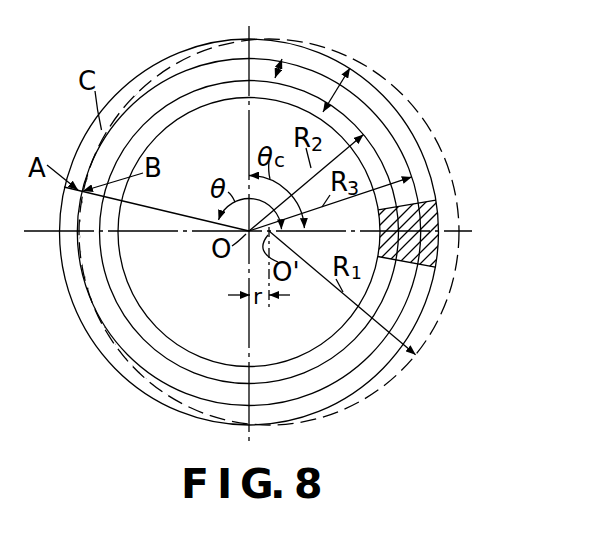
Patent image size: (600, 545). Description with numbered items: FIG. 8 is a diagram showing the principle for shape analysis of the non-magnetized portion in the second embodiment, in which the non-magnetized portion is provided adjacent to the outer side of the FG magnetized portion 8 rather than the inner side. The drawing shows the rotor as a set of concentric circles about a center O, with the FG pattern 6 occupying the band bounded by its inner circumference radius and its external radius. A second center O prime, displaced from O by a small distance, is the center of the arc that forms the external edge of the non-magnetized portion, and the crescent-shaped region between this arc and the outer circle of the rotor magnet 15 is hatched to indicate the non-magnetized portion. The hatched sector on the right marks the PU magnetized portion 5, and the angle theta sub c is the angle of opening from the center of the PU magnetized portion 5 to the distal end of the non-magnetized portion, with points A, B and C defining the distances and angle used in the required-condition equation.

The tubular member 15 is at (110, 362).
The FG pattern 6 is at (292, 67).
The FG magnetized portion 8 is at (352, 70).
The PU magnetized portion 5 is at (462, 194).